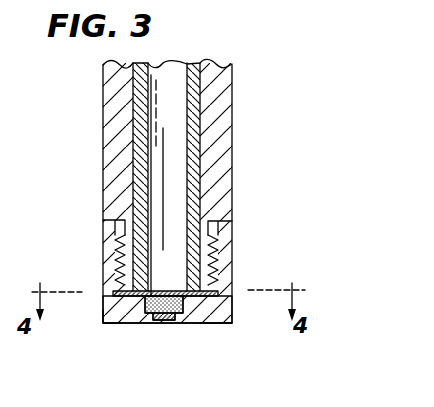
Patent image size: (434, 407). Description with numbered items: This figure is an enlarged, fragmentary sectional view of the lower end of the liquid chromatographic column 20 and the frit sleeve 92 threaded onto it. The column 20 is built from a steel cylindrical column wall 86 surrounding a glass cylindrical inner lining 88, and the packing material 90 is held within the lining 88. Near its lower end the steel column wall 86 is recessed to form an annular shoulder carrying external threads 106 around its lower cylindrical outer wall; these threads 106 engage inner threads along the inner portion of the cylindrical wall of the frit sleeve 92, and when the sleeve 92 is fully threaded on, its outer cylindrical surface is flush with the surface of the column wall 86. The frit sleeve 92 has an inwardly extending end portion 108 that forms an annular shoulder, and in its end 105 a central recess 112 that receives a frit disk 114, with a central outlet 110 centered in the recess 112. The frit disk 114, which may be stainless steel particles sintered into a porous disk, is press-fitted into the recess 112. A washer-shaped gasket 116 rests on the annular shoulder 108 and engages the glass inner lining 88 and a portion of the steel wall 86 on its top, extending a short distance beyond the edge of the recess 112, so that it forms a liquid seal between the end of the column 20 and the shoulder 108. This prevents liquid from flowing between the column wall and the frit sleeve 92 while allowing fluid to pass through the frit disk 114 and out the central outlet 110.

The liquid chromatographic column 20 is at (266, 166).
The steel cylindrical column wall 86 is at (103, 170).
The glass cylindrical inner lining 88 is at (200, 140).
The packing material 90 is at (168, 85).
The frit sleeve 92 is at (233, 308).
The end 105 is at (224, 324).
The external threads 106 is at (233, 237).
The inwardly extending end portion 108 is at (104, 325).
The central outlet 110 is at (171, 322).
The central recess 112 is at (148, 321).
The frit disk 114 is at (166, 322).
The washer-shaped gasket 116 is at (116, 258).